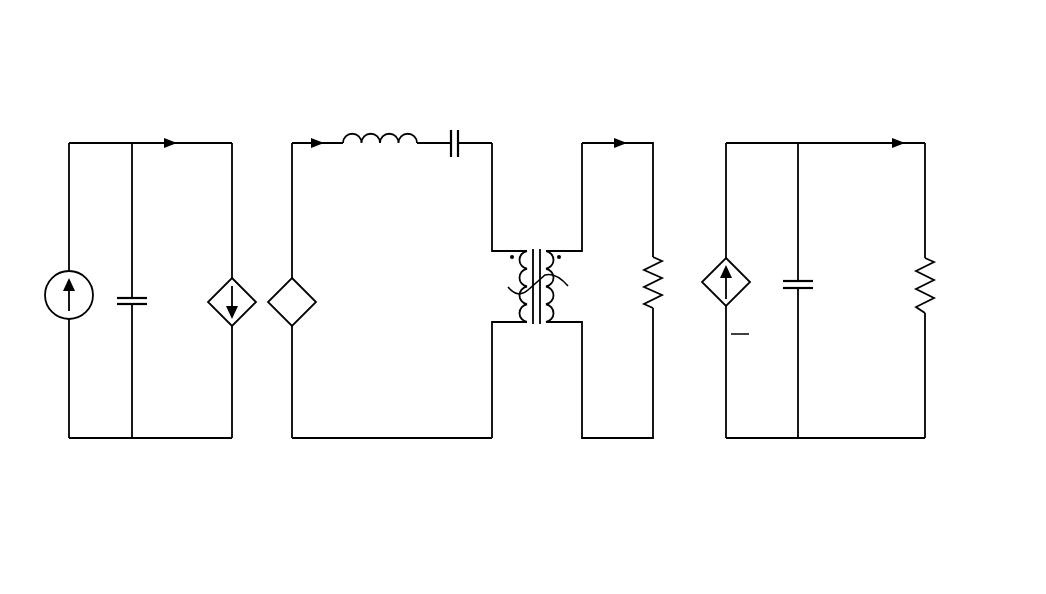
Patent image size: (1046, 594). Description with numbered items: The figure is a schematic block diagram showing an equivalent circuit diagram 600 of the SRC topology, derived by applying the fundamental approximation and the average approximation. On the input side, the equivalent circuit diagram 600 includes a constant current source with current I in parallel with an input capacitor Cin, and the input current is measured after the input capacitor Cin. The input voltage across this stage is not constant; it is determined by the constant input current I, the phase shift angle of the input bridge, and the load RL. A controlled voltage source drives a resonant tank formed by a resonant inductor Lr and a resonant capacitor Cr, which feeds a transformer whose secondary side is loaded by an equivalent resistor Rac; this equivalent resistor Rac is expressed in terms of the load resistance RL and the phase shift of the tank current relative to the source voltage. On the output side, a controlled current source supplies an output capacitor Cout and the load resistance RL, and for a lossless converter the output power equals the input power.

The equivalent circuit diagram 600 is at (140, 82).
The constant current source current I is at (69, 290).
The input capacitor Cin is at (138, 290).
The resonant inductor Lr is at (380, 123).
The resonant capacitor Cr is at (452, 129).
The equivalent resistor Rac is at (667, 282).
The output capacitor Cout is at (810, 290).
The load resistance RL is at (936, 285).